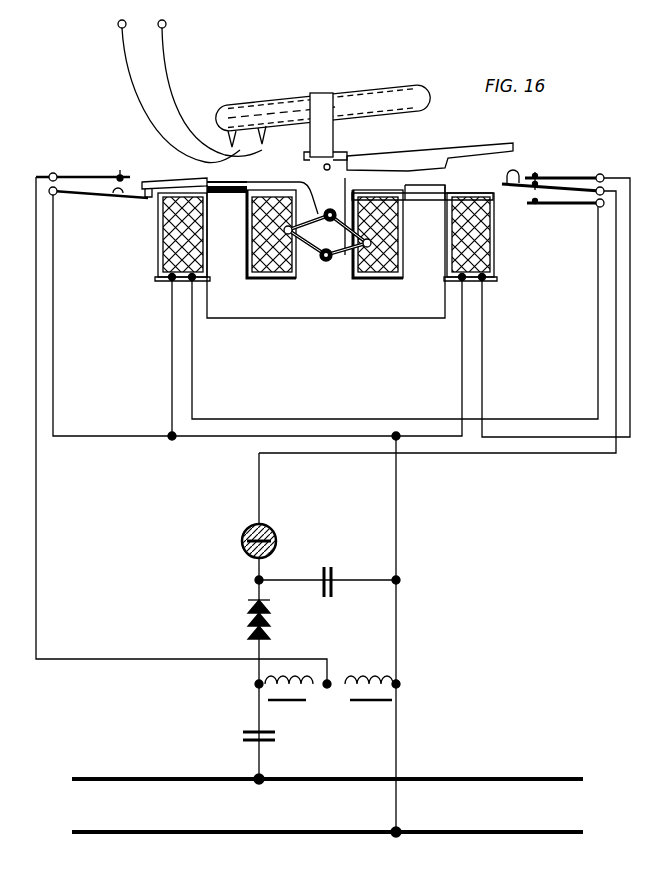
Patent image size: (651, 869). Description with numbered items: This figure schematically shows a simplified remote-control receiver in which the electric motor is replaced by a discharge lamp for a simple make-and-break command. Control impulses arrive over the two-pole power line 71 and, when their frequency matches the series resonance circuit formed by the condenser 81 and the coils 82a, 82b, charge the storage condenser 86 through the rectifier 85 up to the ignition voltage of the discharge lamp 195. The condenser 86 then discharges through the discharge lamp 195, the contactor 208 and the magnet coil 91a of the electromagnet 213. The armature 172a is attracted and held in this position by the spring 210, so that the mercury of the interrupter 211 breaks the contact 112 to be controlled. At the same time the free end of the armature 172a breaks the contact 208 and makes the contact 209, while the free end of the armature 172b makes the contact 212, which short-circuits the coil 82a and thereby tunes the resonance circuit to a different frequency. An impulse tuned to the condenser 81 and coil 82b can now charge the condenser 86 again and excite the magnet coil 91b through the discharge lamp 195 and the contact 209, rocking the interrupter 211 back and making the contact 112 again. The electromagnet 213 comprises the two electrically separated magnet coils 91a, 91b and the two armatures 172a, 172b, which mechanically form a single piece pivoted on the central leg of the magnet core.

The two-pole power line 71 is at (143, 781).
The series resonance circuit condenser 81 is at (245, 736).
The coil of series resonance circuit 82a is at (373, 701).
The coil of series resonance circuit 82b is at (299, 701).
The rectifier 85 is at (251, 632).
The storage condenser 86 is at (332, 576).
The magnet coil 91a is at (392, 272).
The magnet coil 91b is at (270, 272).
The contact 112 is at (245, 142).
The armature 172a is at (432, 158).
The armature 172b is at (228, 186).
The discharge lamp 195 is at (242, 541).
The contactor 208 is at (540, 178).
The contact 209 is at (535, 196).
The spring 210 is at (325, 262).
The interrupter 211 is at (372, 103).
The contact 212 is at (121, 175).
The electromagnet 213 is at (342, 305).